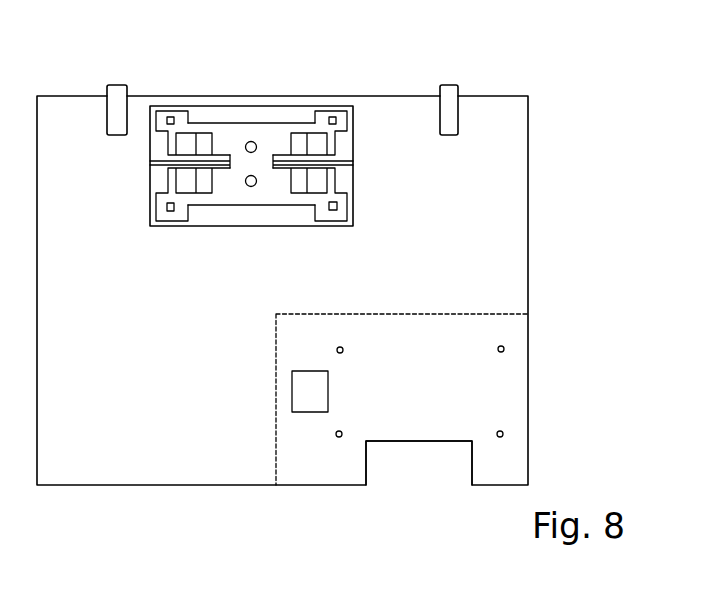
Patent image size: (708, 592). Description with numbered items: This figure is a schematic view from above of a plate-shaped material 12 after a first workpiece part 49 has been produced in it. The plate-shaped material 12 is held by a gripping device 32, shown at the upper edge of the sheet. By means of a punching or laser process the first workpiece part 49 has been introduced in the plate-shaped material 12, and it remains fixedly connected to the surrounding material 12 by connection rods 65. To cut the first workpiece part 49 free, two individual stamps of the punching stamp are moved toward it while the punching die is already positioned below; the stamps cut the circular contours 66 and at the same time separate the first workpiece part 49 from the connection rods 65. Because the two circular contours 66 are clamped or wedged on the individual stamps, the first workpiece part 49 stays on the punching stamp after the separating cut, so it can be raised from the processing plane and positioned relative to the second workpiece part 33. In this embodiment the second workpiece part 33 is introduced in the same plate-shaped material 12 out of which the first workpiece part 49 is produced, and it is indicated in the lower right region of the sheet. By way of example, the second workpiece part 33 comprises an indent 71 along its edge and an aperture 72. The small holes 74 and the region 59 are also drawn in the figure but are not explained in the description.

The plate-shaped material 12 is at (503, 183).
The gripping device 32 is at (458, 119).
The second workpiece part 33 is at (488, 307).
The first workpiece part 49 is at (328, 82).
The central contact region 59 is at (278, 142).
The connection rods 65 is at (168, 157).
The circular contour 66 is at (272, 153).
The indent 71 is at (417, 468).
The aperture 72 is at (310, 397).
The hole 74 is at (337, 206).